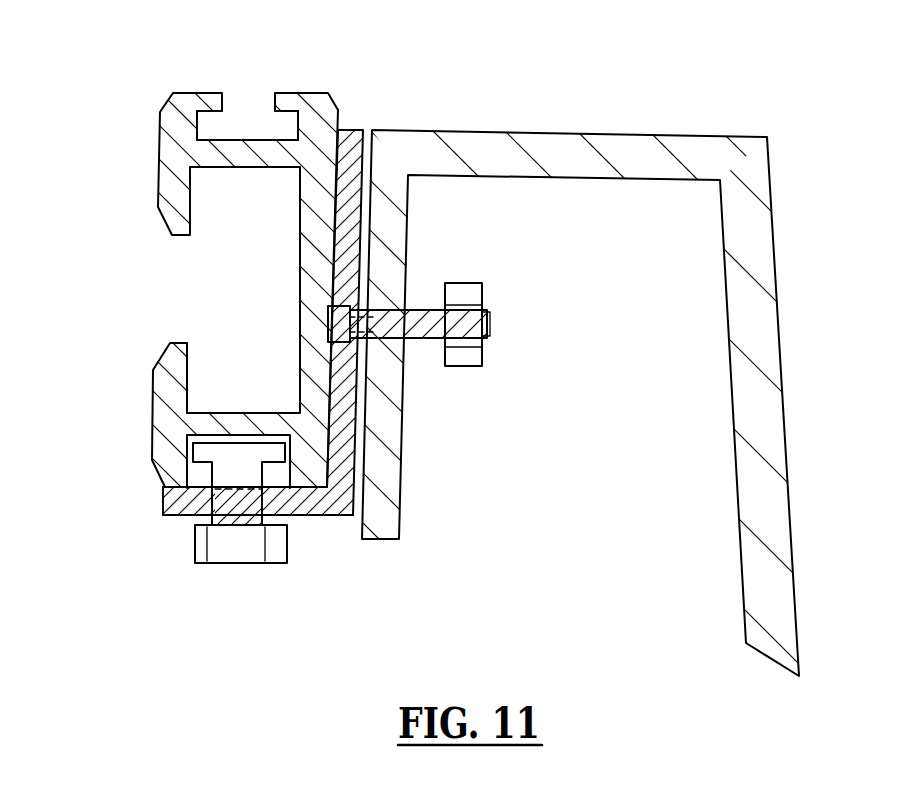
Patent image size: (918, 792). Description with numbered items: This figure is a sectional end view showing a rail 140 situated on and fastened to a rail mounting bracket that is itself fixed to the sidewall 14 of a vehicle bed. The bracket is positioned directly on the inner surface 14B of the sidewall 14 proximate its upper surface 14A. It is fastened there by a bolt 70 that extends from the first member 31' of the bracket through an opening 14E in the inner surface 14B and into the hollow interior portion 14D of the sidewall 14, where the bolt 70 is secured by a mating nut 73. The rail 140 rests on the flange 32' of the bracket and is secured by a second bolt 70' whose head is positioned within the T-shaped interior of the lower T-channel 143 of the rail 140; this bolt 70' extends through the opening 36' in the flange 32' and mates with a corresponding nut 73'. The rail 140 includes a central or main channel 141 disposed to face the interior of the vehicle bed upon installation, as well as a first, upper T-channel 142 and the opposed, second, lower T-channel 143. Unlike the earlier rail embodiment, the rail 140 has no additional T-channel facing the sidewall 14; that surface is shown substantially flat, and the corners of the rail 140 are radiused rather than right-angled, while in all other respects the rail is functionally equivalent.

The sidewall 14 is at (459, 396).
The upper surface 14A is at (580, 130).
The inner surface 14B is at (377, 167).
The hollow interior portion 14D is at (588, 336).
The opening 14E is at (385, 312).
The first member 31' is at (442, 396).
The flange 32' is at (289, 564).
The opening 36' is at (250, 567).
The bolt 70 is at (410, 396).
The bolt 70' is at (392, 392).
The nut 73 is at (479, 300).
The nut 73' is at (205, 589).
The rail 140 is at (111, 243).
The main channel 141 is at (208, 283).
The first T-channel 142 is at (248, 103).
The second T-channel 143 is at (193, 452).